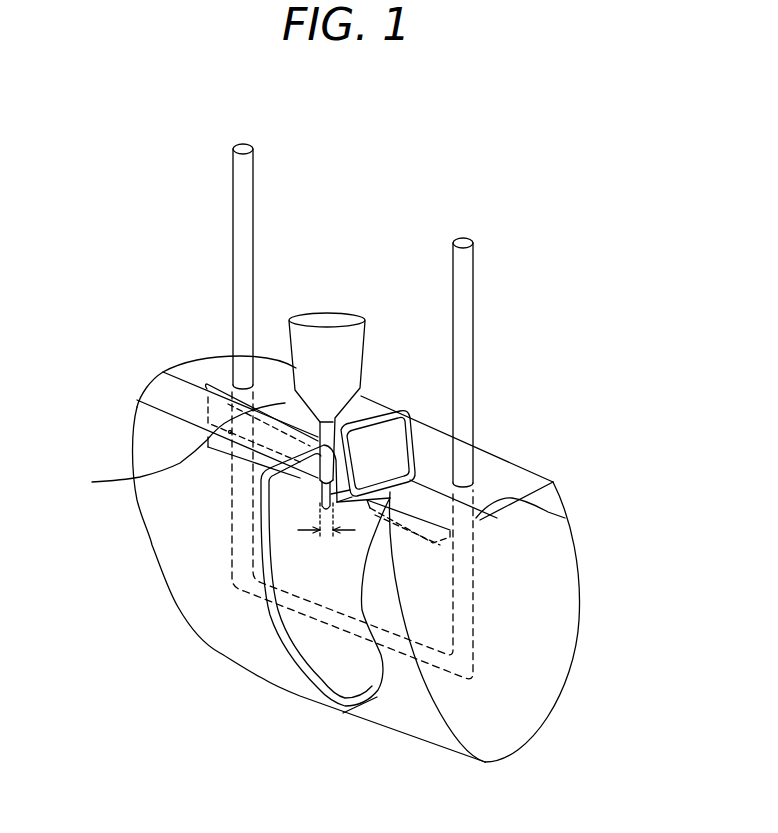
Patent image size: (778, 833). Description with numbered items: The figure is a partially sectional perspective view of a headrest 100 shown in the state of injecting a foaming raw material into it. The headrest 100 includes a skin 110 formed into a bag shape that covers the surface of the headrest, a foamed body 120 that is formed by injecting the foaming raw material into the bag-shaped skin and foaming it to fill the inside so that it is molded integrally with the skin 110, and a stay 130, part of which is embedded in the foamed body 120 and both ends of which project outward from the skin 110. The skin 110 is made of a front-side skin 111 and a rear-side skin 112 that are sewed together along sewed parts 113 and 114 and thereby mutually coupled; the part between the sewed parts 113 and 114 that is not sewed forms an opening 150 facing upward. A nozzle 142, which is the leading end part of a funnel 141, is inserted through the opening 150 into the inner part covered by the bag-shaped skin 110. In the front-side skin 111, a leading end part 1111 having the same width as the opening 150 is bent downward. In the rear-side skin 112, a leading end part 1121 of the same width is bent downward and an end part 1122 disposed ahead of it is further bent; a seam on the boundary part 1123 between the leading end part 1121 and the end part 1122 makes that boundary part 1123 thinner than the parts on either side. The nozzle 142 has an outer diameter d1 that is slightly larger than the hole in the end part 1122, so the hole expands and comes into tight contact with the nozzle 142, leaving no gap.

The headrest 100 is at (137, 228).
The skin 110 is at (220, 620).
The front-side skin 111 is at (163, 395).
The rear-side skin 112 is at (507, 475).
The sewed part 113 is at (187, 377).
The sewed part 114 is at (565, 518).
The foamed body 120 is at (333, 657).
The stay 130 is at (248, 183).
The funnel 141 is at (350, 353).
The nozzle 142 is at (340, 416).
The opening 150 is at (165, 450).
The leading end part 1111 is at (320, 457).
The leading end part 1121 is at (343, 472).
The end part 1122 is at (295, 514).
The boundary part 1123 is at (370, 515).
The diameter of the nozzle d1 is at (326, 533).